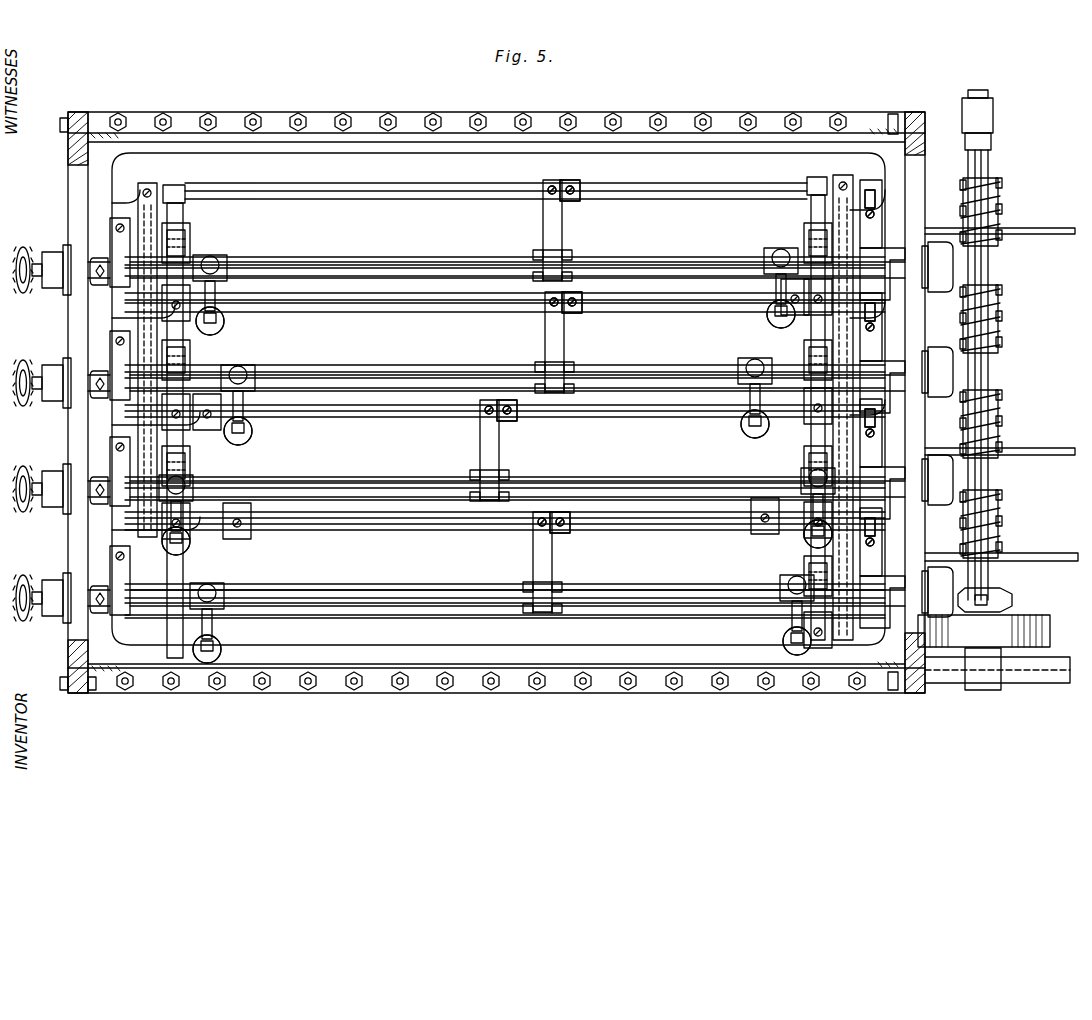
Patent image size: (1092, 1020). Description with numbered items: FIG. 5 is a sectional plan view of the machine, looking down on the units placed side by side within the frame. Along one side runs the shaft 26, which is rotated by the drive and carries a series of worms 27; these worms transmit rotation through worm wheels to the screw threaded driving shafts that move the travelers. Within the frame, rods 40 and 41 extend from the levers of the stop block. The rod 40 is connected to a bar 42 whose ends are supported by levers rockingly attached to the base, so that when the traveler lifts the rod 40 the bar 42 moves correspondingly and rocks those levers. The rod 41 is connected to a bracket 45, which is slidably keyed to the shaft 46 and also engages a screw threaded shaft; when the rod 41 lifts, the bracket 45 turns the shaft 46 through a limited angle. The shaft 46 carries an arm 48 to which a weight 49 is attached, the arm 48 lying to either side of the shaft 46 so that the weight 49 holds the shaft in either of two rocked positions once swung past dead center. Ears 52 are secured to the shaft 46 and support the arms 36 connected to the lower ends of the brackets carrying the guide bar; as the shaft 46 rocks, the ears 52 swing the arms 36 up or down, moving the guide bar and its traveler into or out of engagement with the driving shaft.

The shaft 26 is at (990, 268).
The worm 27 is at (1000, 194).
The arm 36 is at (875, 214).
The rod 40 is at (575, 187).
The rod 41 is at (552, 185).
The bar 42 is at (688, 190).
The bracket 45 is at (553, 560).
The shaft 46 is at (648, 258).
The arm 48 is at (218, 290).
The weight 49 is at (224, 325).
The ear 52 is at (875, 200).